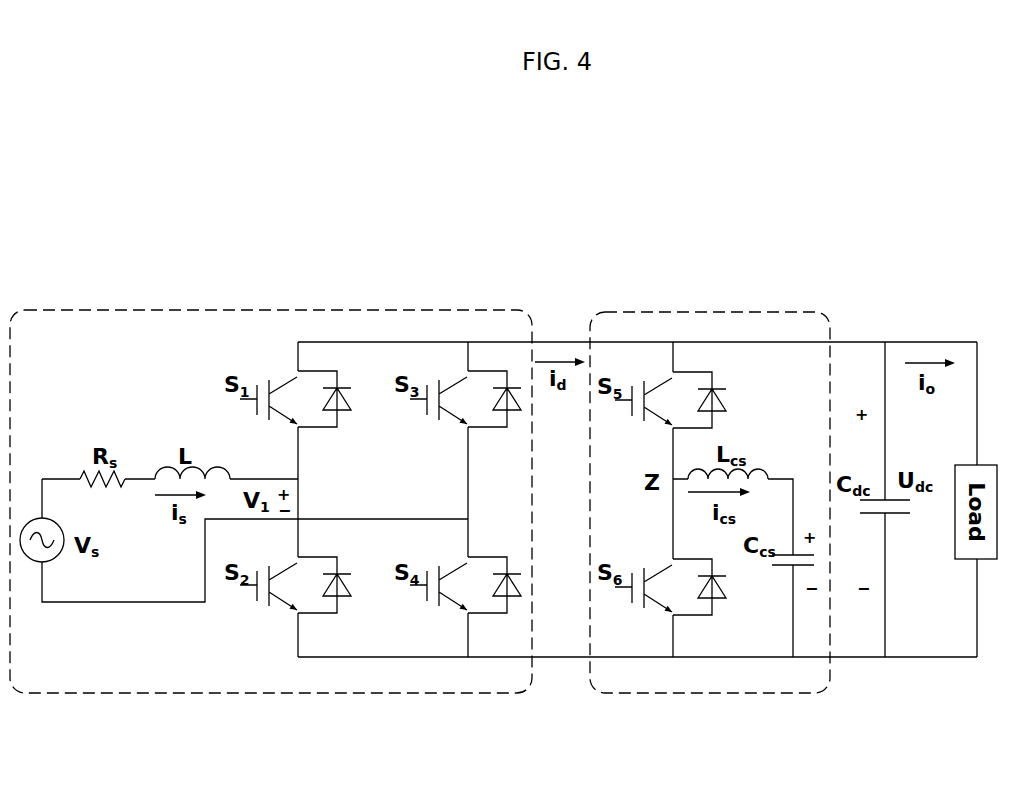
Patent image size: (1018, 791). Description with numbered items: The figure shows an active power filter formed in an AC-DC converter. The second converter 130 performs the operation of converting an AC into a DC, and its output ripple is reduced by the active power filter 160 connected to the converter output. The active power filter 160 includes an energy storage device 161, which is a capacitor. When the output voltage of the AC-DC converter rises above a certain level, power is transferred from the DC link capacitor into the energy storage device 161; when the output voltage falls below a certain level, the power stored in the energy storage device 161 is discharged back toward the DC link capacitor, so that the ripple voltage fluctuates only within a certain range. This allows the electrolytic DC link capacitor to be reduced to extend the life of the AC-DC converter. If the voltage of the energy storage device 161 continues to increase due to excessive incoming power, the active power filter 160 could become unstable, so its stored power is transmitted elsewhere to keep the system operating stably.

The second converter 130 is at (160, 310).
The active power filter 160 is at (757, 312).
The energy storage device 161 is at (782, 567).